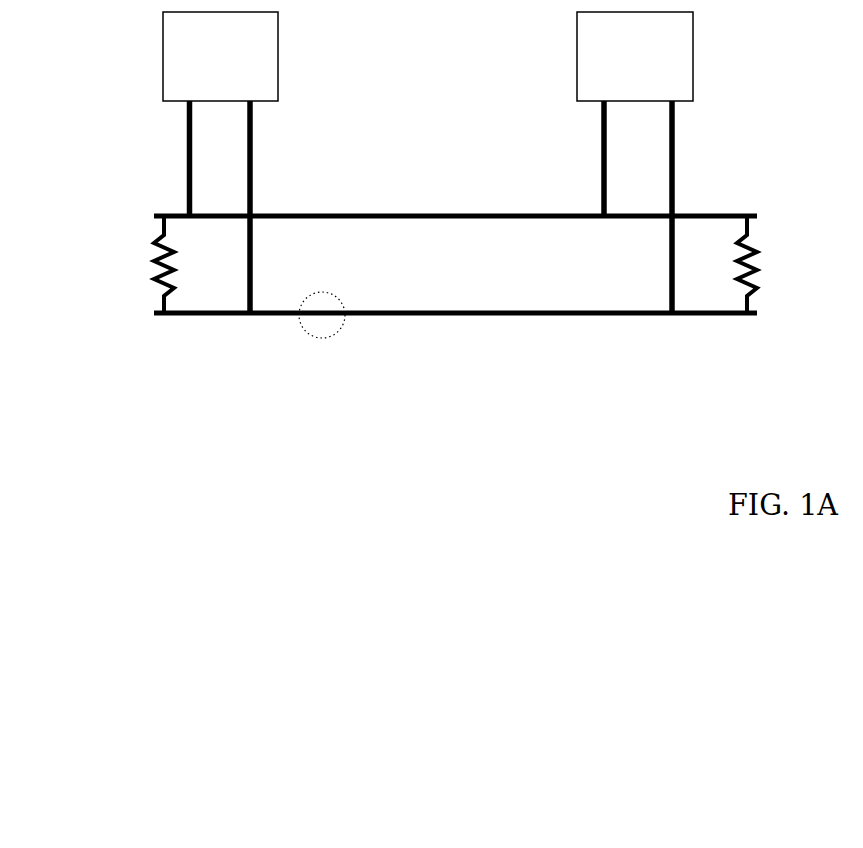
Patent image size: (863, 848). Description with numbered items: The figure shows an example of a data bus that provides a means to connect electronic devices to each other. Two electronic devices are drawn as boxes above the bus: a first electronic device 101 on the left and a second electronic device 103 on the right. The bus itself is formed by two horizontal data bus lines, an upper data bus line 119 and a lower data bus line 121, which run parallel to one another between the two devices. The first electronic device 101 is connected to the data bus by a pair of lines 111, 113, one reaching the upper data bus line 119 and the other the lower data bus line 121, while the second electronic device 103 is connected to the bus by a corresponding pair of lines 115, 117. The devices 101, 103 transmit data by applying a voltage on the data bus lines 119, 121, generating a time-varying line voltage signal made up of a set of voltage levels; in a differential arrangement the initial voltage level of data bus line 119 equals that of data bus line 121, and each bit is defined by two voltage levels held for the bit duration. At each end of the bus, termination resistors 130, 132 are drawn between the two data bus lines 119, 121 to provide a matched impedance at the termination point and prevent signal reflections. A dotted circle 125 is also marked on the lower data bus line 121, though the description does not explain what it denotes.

The electronic device 101 is at (198, 68).
The electronic device 103 is at (613, 68).
The line 111 is at (187, 183).
The line 113 is at (253, 176).
The line 115 is at (602, 175).
The line 117 is at (675, 176).
The data bus line 119 is at (572, 220).
The data bus line 121 is at (482, 317).
The ground return path region 125 is at (340, 330).
The termination resistor 130 is at (155, 273).
The termination resistor 132 is at (757, 285).